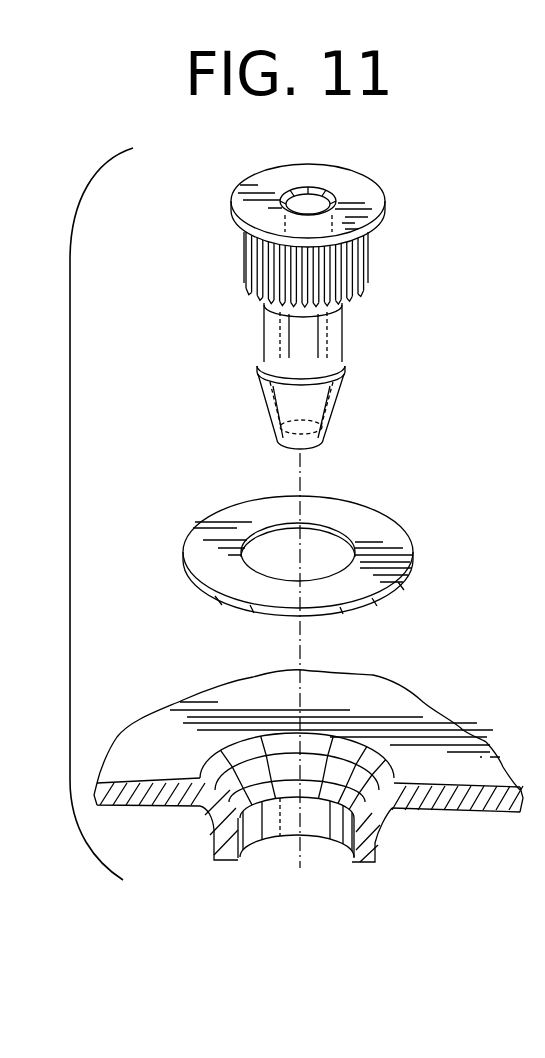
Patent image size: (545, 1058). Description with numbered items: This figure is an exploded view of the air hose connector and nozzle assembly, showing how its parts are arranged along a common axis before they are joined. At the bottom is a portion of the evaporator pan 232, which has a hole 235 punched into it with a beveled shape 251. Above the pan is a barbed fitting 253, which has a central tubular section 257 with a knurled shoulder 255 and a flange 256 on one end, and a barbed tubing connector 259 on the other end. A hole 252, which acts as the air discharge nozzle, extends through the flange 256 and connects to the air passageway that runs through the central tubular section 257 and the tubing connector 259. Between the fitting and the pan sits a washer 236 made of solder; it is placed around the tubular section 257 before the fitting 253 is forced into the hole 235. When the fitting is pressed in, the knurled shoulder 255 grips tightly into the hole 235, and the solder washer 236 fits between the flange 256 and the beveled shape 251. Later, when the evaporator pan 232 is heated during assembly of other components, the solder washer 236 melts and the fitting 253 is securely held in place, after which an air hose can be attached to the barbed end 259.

The evaporator pan 232 is at (410, 708).
The hole 235 is at (272, 826).
The solder washer 236 is at (380, 530).
The beveled shape 251 is at (332, 764).
The hole 252 is at (308, 203).
The barbed fitting 253 is at (319, 283).
The knurled shoulder 255 is at (368, 262).
The flange 256 is at (360, 190).
The central tubular section 257 is at (265, 333).
The barbed tubing connector 259 is at (335, 412).